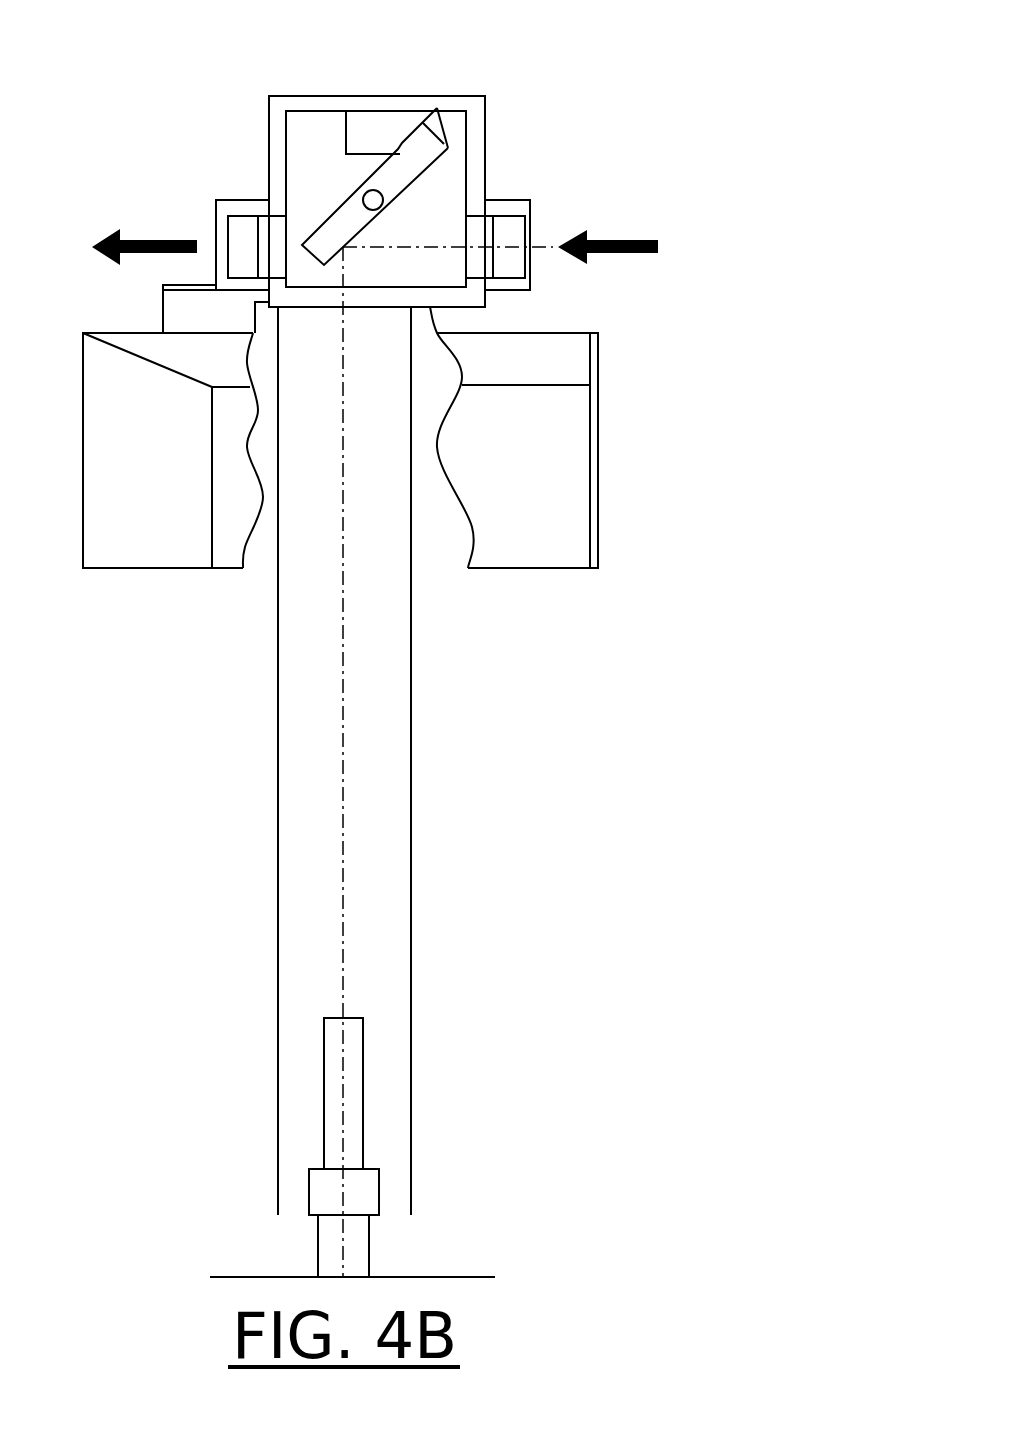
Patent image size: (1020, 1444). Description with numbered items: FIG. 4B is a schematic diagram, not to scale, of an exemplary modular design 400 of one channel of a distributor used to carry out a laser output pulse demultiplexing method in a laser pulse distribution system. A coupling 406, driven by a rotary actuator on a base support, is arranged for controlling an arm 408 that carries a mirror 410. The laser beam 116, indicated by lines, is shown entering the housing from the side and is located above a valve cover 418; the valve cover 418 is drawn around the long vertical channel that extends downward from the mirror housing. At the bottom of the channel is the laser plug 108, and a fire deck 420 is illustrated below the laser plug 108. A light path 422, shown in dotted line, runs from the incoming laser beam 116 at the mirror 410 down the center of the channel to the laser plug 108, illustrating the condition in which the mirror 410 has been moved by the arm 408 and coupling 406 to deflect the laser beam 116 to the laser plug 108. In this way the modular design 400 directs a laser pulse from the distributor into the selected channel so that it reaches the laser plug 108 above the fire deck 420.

The modular design 400 is at (248, 81).
The coupling 406 is at (385, 117).
The arm 408 is at (435, 158).
The mirror 410 is at (437, 157).
The light path 422 is at (503, 247).
The laser beam 116 is at (448, 242).
The valve cover 418 is at (593, 353).
The laser plug 108 is at (360, 1017).
The fire deck 420 is at (408, 1278).